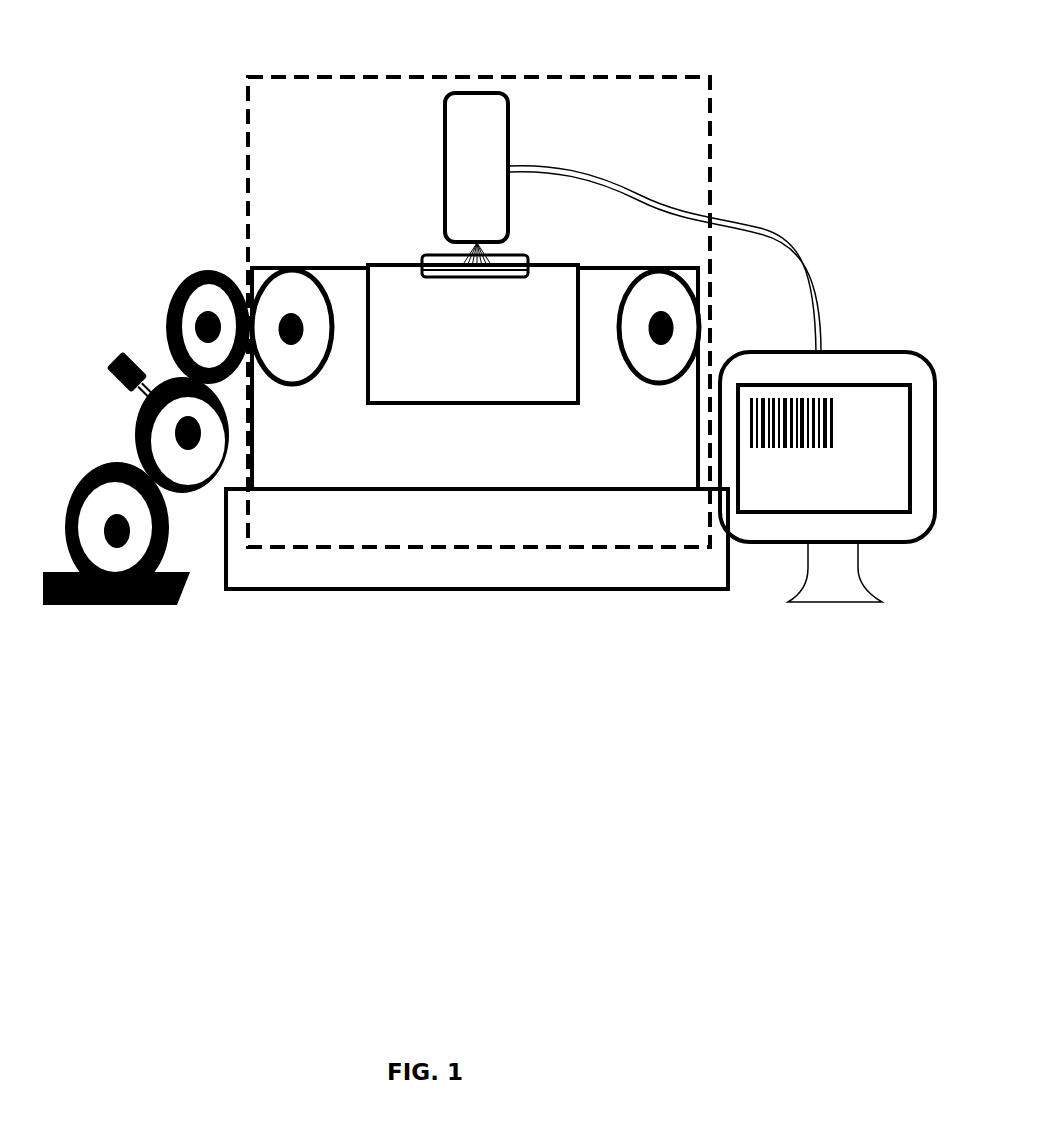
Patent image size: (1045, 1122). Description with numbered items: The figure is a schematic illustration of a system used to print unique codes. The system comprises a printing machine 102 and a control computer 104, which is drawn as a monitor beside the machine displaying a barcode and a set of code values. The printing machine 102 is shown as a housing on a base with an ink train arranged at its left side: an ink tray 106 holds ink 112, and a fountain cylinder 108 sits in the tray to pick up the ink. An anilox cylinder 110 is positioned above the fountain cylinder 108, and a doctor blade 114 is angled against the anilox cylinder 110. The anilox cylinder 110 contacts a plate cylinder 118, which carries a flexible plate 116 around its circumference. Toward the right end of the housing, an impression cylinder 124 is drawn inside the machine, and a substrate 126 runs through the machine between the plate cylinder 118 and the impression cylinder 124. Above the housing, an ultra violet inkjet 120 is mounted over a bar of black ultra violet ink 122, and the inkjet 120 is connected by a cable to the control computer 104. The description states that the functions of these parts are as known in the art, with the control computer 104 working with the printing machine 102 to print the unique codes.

The printing machine 102 is at (457, 547).
The control computer 104 is at (878, 351).
The ink tray 106 is at (148, 605).
The fountain cylinder 108 is at (104, 556).
The anilox cylinder 110 is at (203, 473).
The ink 112 is at (117, 459).
The doctor blade 114 is at (108, 367).
The flexible plate 116 is at (230, 273).
The plate cylinder 118 is at (200, 313).
The ultra violet inkjet 120 is at (475, 93).
The black ultra violet ink 122 is at (528, 257).
The impression cylinder 124 is at (685, 310).
The substrate 126 is at (697, 490).